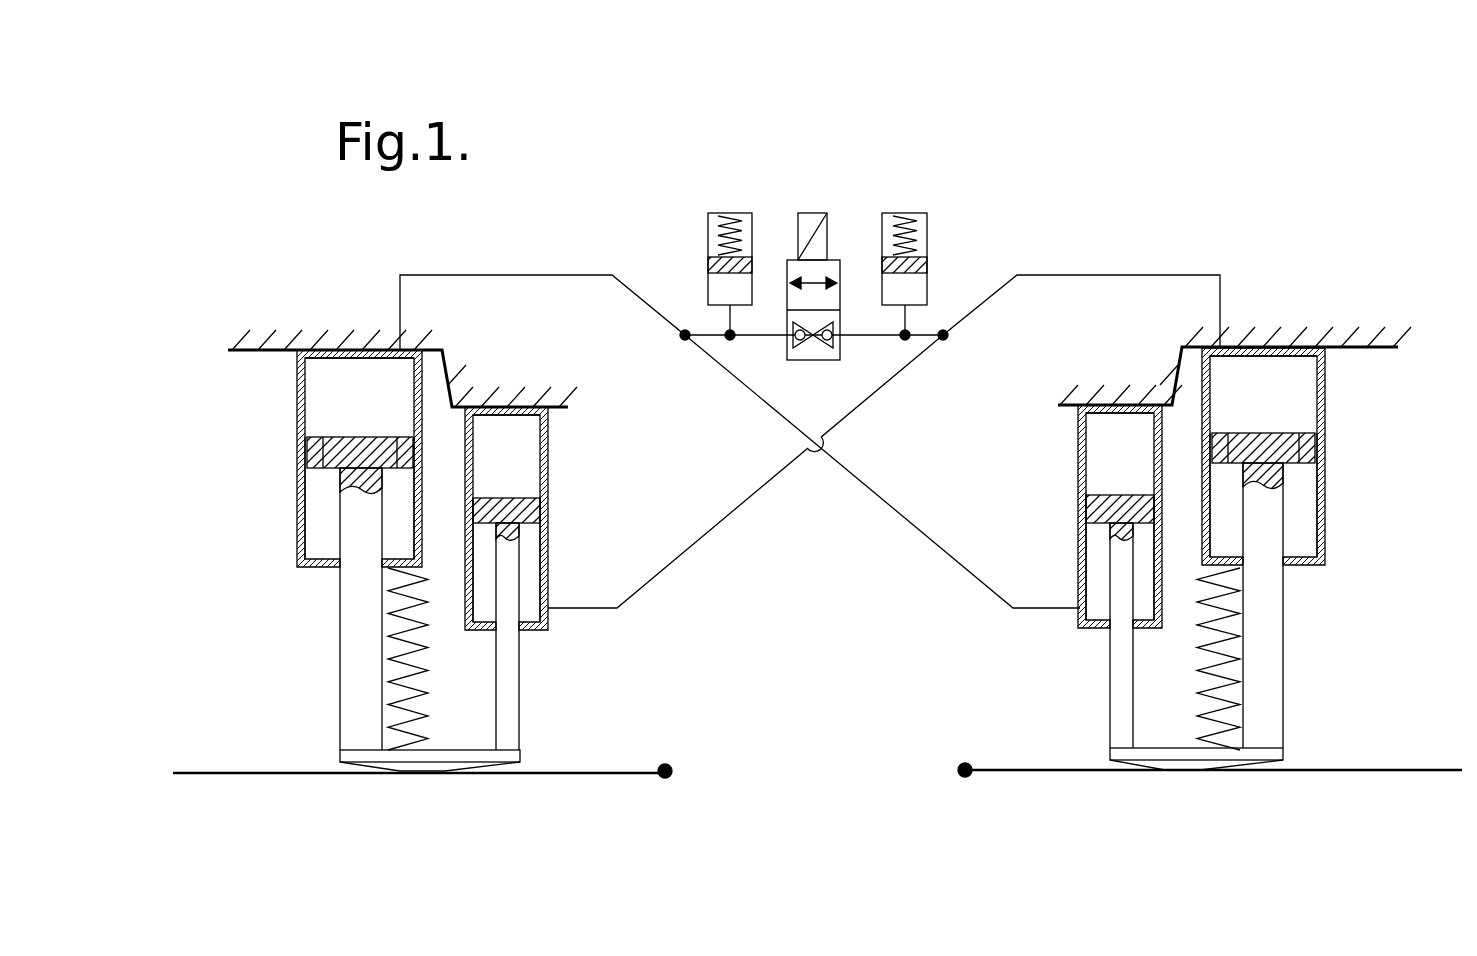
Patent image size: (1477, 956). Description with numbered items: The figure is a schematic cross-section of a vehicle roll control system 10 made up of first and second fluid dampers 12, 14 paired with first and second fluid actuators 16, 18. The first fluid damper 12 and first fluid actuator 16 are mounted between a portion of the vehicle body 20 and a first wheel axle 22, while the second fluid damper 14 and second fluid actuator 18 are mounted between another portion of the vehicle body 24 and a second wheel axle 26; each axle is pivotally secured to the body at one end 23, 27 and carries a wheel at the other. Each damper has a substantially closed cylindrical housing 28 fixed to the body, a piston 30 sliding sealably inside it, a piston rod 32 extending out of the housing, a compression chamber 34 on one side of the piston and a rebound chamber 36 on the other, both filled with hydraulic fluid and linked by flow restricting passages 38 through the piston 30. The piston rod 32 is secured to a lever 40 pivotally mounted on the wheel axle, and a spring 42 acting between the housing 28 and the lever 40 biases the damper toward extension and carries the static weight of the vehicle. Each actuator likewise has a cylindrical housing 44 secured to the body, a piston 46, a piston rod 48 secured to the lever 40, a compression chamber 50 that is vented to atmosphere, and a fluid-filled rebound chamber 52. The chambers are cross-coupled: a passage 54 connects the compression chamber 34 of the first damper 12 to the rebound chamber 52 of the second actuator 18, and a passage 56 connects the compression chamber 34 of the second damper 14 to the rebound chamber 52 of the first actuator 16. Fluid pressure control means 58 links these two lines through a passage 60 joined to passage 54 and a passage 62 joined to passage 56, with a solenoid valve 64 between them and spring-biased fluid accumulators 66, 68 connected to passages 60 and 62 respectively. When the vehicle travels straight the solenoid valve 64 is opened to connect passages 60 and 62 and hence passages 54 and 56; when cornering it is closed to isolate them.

The roll control system 10 is at (1200, 207).
The first fluid damper 12 is at (290, 520).
The second fluid damper 14 is at (1334, 520).
The first fluid actuator 16 is at (553, 634).
The second fluid actuator 18 is at (1070, 632).
The portion of the vehicle body 20 is at (237, 352).
The first wheel axle 22 is at (583, 775).
The pivot end of first wheel axle 23 is at (673, 771).
The portion of the vehicle body 24 is at (1380, 347).
The second wheel axle 26 is at (1328, 773).
The pivot end of second wheel axle 27 is at (957, 770).
The cylindrical housing 28 is at (304, 473).
The piston 30 is at (306, 438).
The piston rod 32 is at (350, 662).
The compression chamber 34 is at (322, 372).
The rebound chamber 36 is at (318, 508).
The flow restricting passages 38 is at (400, 437).
The lever 40 is at (412, 773).
The spring 42 is at (430, 690).
The cylindrical housing 44 is at (547, 470).
The piston 46 is at (548, 508).
The piston rod 48 is at (520, 718).
The compression chamber 50 is at (520, 438).
The rebound chamber 52 is at (535, 562).
The passage 54 is at (897, 516).
The passage 56 is at (704, 536).
The fluid pressure control means 58 is at (852, 245).
The passage 60 is at (767, 337).
The passage 62 is at (858, 333).
The solenoid valve 64 is at (806, 213).
The fluid accumulator 66 is at (728, 213).
The fluid accumulator 68 is at (910, 213).